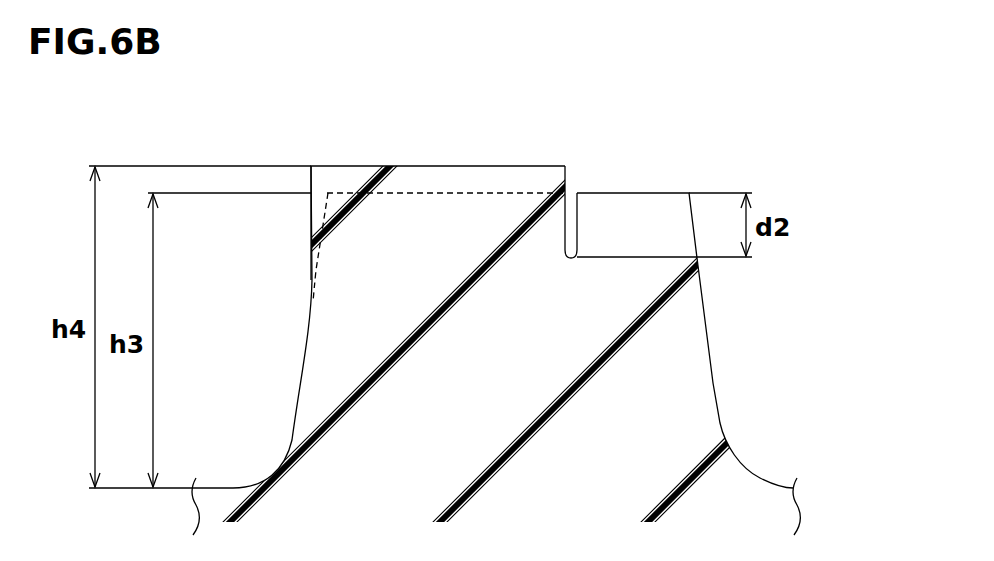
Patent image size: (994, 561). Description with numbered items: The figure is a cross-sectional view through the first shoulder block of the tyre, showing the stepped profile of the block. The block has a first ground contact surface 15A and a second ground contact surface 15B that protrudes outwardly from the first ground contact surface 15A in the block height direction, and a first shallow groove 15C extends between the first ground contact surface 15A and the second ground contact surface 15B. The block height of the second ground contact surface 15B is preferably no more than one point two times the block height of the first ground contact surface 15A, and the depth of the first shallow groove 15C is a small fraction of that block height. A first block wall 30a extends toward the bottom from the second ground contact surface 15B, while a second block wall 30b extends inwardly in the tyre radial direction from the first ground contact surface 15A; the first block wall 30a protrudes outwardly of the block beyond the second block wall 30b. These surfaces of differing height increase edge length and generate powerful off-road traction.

The second ground contact surface 15B is at (437, 166).
The first shallow groove 15C is at (573, 196).
The first ground contact surface 15A is at (643, 193).
The first block wall 30a is at (310, 212).
The second block wall 30b is at (313, 277).